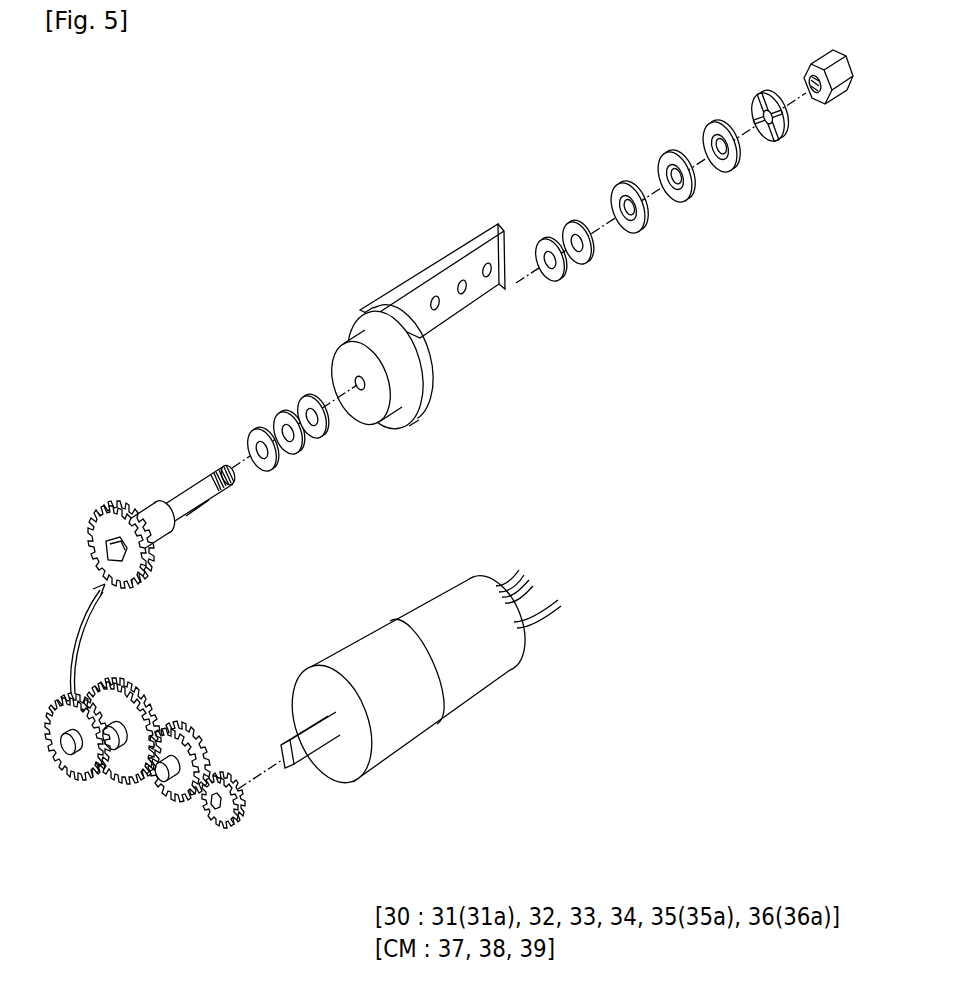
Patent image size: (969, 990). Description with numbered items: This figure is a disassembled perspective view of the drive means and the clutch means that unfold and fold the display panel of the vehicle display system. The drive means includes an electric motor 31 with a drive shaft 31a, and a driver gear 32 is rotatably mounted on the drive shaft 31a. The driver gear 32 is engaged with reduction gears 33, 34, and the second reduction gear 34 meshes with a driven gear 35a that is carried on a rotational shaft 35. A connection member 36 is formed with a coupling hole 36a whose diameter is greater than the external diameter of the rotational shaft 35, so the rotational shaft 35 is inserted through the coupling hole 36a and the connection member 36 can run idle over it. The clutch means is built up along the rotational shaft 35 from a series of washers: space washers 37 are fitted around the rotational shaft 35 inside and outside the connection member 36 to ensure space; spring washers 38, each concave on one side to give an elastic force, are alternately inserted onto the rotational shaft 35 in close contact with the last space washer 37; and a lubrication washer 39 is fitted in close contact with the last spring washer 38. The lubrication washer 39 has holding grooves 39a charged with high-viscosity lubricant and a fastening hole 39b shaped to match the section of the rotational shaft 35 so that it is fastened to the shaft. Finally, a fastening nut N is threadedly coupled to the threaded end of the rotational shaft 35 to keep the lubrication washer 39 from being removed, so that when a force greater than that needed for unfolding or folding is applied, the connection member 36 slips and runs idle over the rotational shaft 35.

The electric motor 31 is at (410, 730).
The drive shaft 31a is at (302, 753).
The driver gear 32 is at (215, 820).
The reduction gear 33 is at (158, 782).
The reduction gear 34 is at (122, 760).
The rotational shaft 35 is at (183, 515).
The driven gear 35a is at (128, 572).
The connection member 36 is at (400, 287).
The coupling hole 36a is at (356, 379).
The space washer 37 is at (321, 440).
The spring washer 38 is at (638, 227).
The lubrication washer 39 is at (783, 140).
The holding groove 39a is at (754, 113).
The fastening hole 39b is at (765, 92).
The fastening nut N is at (840, 103).